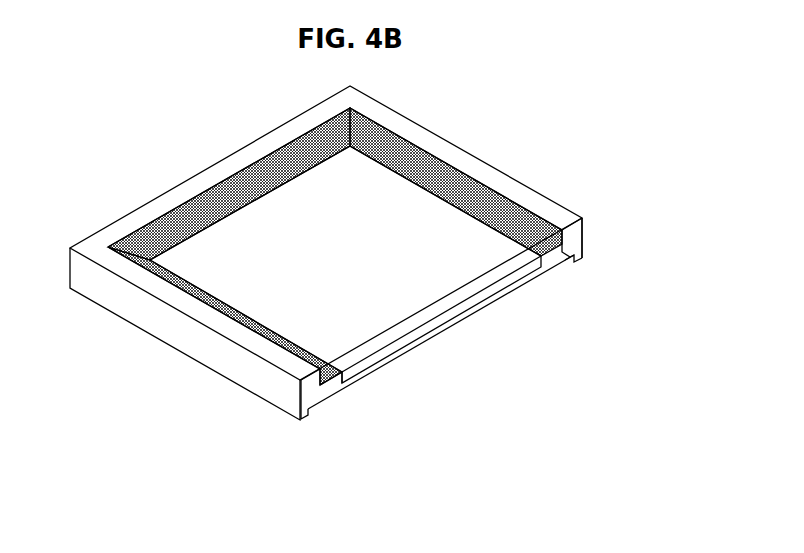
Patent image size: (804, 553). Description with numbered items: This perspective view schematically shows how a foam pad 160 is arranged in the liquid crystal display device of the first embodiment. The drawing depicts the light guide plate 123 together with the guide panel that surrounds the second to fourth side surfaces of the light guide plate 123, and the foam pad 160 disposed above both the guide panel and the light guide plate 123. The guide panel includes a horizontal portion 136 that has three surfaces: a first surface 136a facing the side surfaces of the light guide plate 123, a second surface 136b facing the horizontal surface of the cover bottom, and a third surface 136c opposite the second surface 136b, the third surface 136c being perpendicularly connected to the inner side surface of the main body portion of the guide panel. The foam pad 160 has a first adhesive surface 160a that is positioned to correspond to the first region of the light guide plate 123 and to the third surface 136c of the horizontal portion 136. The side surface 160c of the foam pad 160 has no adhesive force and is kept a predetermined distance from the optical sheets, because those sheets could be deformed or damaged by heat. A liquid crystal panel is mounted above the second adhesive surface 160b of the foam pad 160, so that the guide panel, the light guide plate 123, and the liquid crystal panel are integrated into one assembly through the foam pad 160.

The light guide plate 123 is at (367, 269).
The horizontal portion 136 is at (349, 449).
The first surface 136a is at (348, 388).
The second surface 136b is at (304, 420).
The third surface 136c is at (322, 398).
The foam pad 160 is at (655, 247).
The first adhesive surface 160a is at (572, 240).
The second adhesive surface 160b is at (572, 226).
The side surface 160c is at (556, 262).